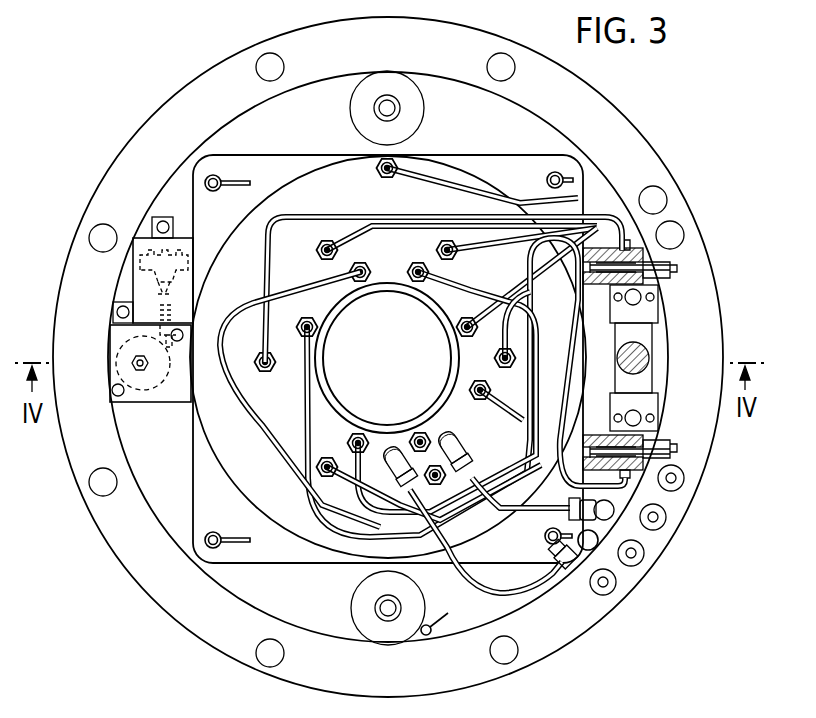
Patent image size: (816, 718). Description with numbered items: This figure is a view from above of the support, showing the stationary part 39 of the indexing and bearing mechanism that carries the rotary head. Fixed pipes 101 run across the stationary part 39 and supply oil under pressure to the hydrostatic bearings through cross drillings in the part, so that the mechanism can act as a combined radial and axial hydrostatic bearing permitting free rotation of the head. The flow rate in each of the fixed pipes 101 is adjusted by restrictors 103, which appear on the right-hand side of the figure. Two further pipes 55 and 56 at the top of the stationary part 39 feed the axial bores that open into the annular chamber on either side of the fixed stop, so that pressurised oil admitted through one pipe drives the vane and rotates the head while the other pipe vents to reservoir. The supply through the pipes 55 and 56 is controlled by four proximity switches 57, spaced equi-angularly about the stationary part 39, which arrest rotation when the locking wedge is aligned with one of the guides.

The stationary part 39 is at (323, 595).
The pipe 55 is at (467, 587).
The pipe 56 is at (532, 513).
The proximity switches 57 is at (213, 192).
The fixed pipes 101 is at (307, 395).
The restrictors 103 is at (661, 258).